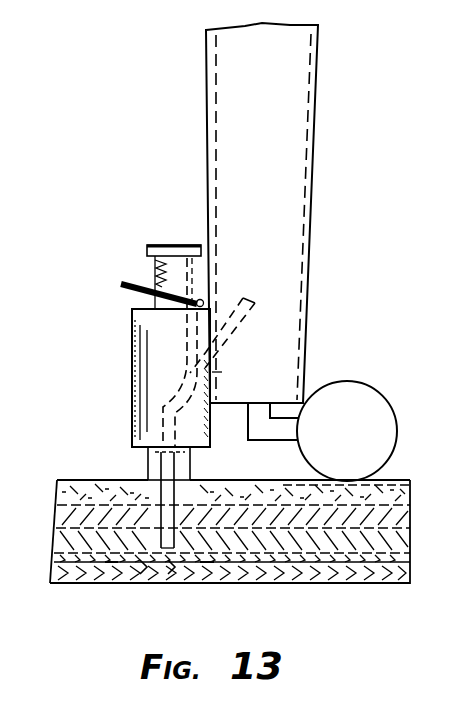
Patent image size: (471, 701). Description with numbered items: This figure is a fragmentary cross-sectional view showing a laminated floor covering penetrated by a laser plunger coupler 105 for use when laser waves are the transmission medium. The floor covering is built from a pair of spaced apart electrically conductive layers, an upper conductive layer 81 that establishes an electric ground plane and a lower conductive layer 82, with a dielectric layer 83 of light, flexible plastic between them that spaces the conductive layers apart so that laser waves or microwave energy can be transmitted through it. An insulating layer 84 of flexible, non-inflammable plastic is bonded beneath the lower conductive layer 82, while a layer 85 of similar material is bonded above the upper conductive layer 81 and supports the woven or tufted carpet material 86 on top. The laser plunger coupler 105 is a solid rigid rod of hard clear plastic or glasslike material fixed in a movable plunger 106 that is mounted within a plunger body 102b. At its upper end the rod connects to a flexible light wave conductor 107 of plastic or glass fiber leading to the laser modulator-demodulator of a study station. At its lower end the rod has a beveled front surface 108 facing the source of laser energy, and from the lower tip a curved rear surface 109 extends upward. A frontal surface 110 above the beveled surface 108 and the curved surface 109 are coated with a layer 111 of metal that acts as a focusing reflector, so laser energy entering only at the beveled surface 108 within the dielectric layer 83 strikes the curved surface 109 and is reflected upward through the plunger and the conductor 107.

The plunger body 102b is at (132, 388).
The laser plunger coupler 105 is at (148, 478).
The movable plunger 106 is at (148, 452).
The flexible light wave conductor 107 is at (231, 352).
The front surface 108 is at (142, 583).
The curved rear surface 109 is at (171, 583).
The frontal surface 110 is at (200, 481).
The layer of metal material 111 is at (112, 583).
The upper conductive layer 81 is at (56, 515).
The lower conductive layer 82 is at (54, 557).
The dielectric layer 83 is at (55, 536).
The insulating layer 84 is at (54, 577).
The support layer 85 is at (57, 497).
The carpet material 86 is at (57, 479).